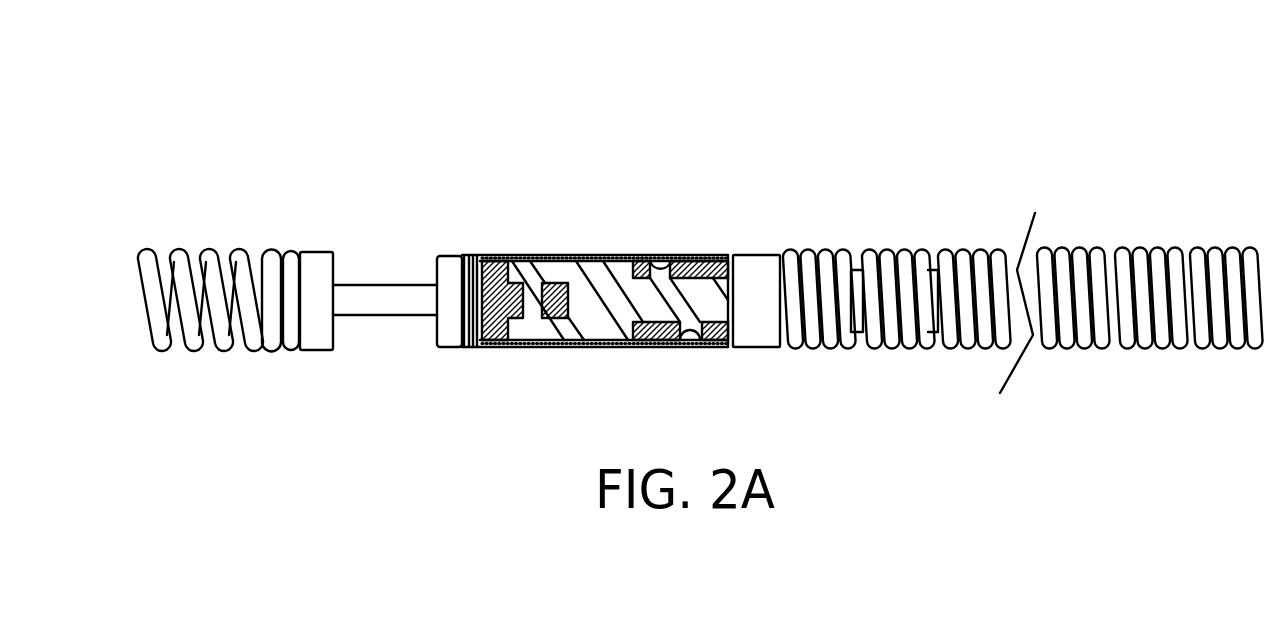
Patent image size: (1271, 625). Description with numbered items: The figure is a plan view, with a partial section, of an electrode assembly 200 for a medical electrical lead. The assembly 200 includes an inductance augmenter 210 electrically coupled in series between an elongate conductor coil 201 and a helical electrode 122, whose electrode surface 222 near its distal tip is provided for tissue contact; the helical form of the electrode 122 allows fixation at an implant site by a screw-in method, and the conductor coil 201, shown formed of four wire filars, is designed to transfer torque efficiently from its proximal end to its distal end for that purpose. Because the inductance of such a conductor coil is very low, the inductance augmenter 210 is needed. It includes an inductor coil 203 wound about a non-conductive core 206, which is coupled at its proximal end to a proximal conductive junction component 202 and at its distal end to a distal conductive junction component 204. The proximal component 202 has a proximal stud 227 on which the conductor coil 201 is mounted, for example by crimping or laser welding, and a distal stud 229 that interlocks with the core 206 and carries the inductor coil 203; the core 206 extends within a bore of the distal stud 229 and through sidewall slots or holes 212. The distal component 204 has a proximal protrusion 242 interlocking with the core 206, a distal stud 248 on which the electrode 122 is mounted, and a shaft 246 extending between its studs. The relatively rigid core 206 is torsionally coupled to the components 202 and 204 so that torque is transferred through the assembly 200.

The electrode assembly 200 is at (322, 118).
The inductance augmenter 210 is at (599, 240).
The distal conductive junction component 204 is at (394, 277).
The distal stud 248 is at (262, 272).
The proximal conductive junction component 202 is at (769, 210).
The elongate conductor coil 201 is at (1023, 281).
The proximal stud 227 is at (855, 270).
The inductor coil 203 is at (527, 255).
The sidewall slots or holes 212 is at (652, 255).
The electrode surface 222 is at (157, 307).
The electrode 122 is at (215, 243).
The shaft 246 is at (384, 305).
The proximal protrusion 242 is at (495, 344).
The non-conductive core 206 is at (618, 318).
The distal stud 229 is at (719, 346).